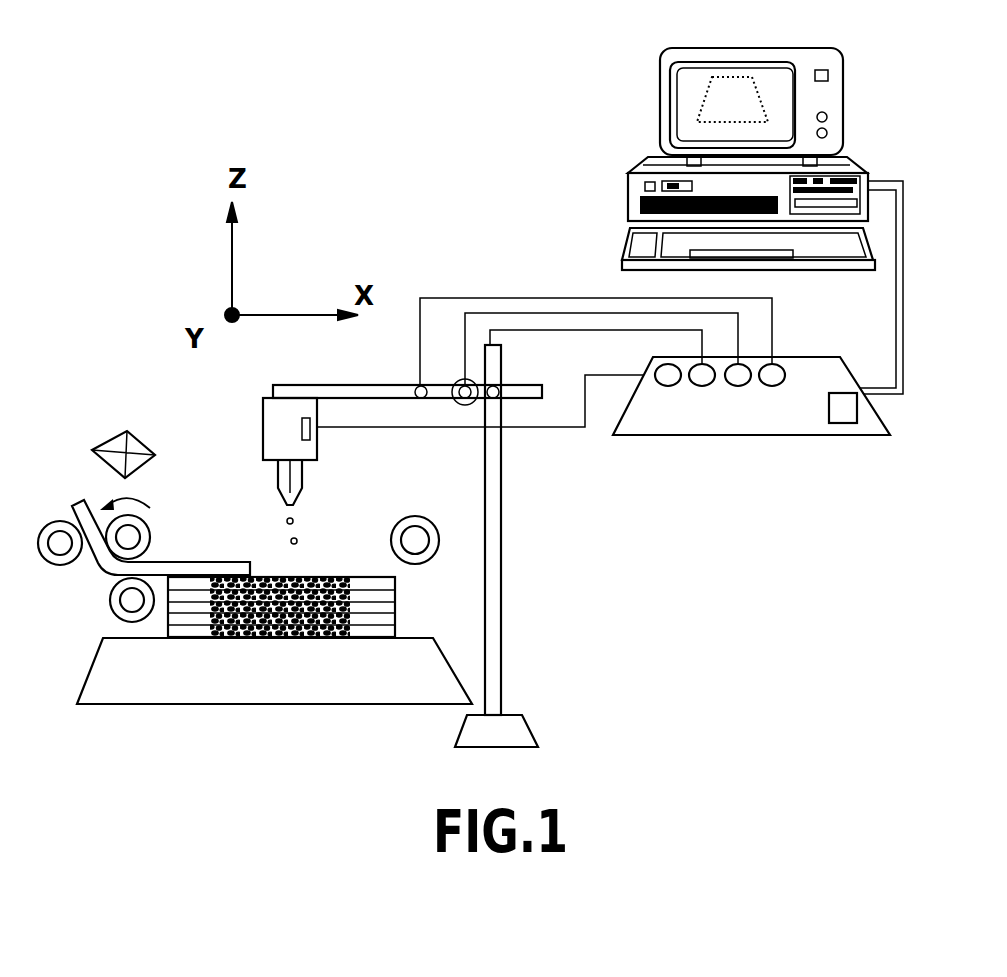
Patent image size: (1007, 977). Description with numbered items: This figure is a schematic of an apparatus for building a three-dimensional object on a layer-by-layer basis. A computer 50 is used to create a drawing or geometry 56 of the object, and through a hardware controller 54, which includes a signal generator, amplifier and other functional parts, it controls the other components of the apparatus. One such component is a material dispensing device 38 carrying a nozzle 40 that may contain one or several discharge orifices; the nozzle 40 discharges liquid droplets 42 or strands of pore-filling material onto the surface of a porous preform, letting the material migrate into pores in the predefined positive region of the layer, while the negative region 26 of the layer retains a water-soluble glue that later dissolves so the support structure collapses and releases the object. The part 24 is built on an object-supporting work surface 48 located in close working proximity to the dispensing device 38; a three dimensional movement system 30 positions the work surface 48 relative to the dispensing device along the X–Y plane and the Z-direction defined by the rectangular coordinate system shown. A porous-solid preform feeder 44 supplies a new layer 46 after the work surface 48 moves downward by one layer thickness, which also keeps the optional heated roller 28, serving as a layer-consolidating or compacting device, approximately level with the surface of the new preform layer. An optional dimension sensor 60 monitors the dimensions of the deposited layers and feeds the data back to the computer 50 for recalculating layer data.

The part 24 is at (308, 577).
The negative region 26 is at (378, 607).
The heated roller 28 is at (440, 547).
The three dimensional movement system 30 is at (513, 402).
The material dispensing device 38 is at (280, 412).
The nozzle 40 is at (292, 478).
The liquid droplets 42 is at (280, 519).
The porous-solid preform feeder 44 is at (70, 562).
The new layer 46 is at (212, 565).
The work surface 48 is at (162, 685).
The computer 50 is at (655, 150).
The hardware controller 54 is at (808, 357).
The drawing or geometry 56 is at (743, 83).
The dimension sensor 60 is at (92, 440).